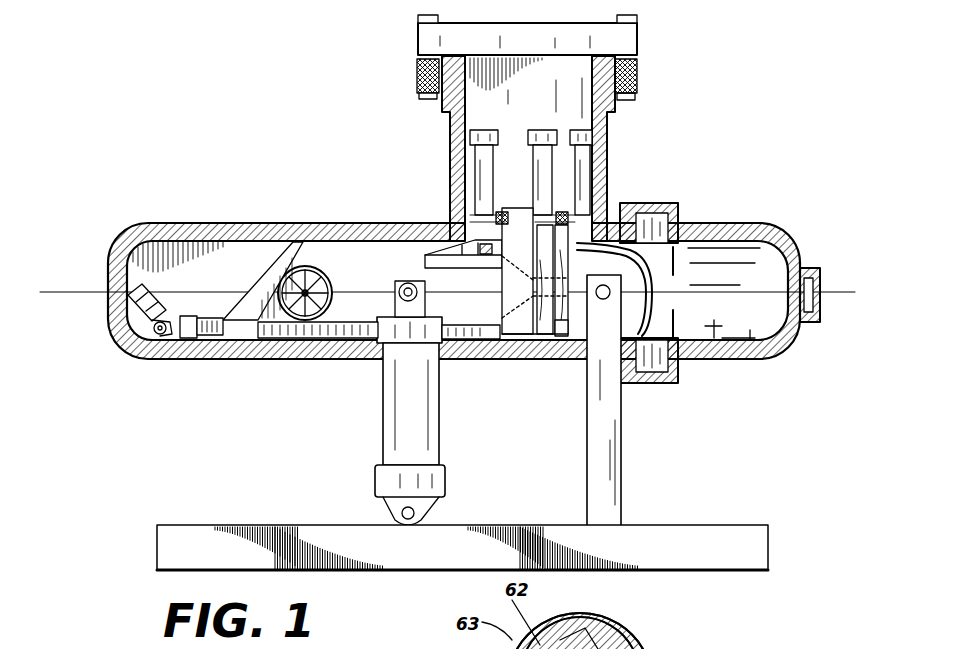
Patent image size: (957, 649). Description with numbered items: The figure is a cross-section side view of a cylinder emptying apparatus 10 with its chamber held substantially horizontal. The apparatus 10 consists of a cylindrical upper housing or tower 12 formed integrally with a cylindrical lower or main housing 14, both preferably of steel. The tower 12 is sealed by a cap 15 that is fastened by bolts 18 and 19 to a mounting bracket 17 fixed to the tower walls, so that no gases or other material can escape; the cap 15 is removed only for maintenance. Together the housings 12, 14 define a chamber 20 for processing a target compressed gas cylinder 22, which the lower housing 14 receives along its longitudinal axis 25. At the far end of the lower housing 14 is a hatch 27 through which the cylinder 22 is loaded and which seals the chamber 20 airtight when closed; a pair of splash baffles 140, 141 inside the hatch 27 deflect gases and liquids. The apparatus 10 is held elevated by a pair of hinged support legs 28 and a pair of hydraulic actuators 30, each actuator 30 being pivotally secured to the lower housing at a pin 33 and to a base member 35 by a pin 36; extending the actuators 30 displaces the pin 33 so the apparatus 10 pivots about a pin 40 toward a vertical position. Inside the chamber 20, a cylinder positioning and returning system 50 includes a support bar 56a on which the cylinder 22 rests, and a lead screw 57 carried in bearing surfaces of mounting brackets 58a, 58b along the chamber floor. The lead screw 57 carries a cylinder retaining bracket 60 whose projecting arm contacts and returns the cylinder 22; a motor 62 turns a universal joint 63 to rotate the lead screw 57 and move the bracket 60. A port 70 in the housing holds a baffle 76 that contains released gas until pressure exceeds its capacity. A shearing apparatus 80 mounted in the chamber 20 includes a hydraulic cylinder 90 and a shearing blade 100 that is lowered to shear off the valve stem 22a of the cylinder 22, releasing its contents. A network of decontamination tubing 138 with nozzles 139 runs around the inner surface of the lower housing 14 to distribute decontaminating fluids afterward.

The cylinder emptying apparatus 10 is at (738, 166).
The upper housing or tower 12 is at (450, 155).
The lower or main housing 14 is at (222, 223).
The cap 15 is at (527, 36).
The mounting bracket 17 is at (614, 107).
The bolt 18 is at (425, 18).
The bolt 19 is at (632, 18).
The chamber 20 is at (770, 262).
The target compressed gas cylinder 22 is at (480, 300).
The valve stem 22a is at (575, 348).
The longitudinal axis 25 is at (92, 270).
The hatch 27 is at (694, 226).
The hinged support legs 28 is at (572, 446).
The hydraulic actuators 30 is at (372, 480).
The pin 33 is at (398, 292).
The base member 35 is at (442, 560).
The pin 36 is at (400, 512).
The pin 40 is at (598, 428).
The cylinder positioning and returning system 50 is at (188, 305).
The support bar 56a is at (222, 318).
The lead screw 57 is at (318, 362).
The mounting bracket 58a is at (170, 360).
The mounting bracket 58b is at (500, 365).
The cylinder retaining bracket 60 is at (291, 246).
The motor 62 is at (128, 320).
The universal joint 63 is at (152, 356).
The port 70 is at (330, 268).
The baffle 76 is at (272, 362).
The shearing apparatus 80 is at (533, 122).
The hydraulic cylinder 90 is at (438, 248).
The shearing blade 100 is at (533, 342).
The decontamination tubing 138 is at (664, 316).
The nozzles 139 is at (722, 326).
The splash baffle 140 is at (684, 372).
The splash baffle 141 is at (678, 266).